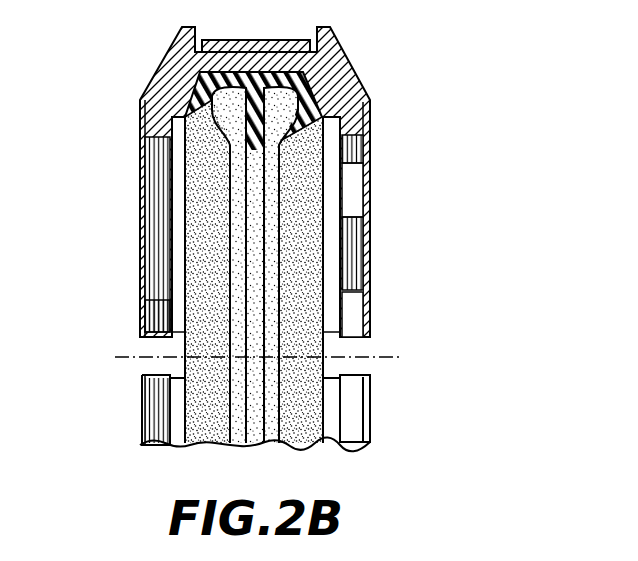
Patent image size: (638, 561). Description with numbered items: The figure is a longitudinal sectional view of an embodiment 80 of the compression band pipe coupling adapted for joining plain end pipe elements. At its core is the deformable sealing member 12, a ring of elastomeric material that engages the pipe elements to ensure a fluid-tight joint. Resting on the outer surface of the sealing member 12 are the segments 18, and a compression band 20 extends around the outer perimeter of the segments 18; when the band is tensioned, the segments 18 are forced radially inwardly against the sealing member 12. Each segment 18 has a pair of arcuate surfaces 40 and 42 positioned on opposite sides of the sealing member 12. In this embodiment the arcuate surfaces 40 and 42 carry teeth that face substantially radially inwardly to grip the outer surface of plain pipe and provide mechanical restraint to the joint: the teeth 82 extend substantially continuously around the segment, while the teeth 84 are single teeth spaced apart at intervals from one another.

The sealing member 12 is at (214, 102).
The segments 18 is at (363, 86).
The compression band 20 is at (285, 42).
The arcuate surface 40 is at (148, 313).
The arcuate surface 42 is at (357, 310).
The embodiment 80 is at (472, 155).
The teeth 82 is at (150, 230).
The single tooth 84 is at (357, 253).